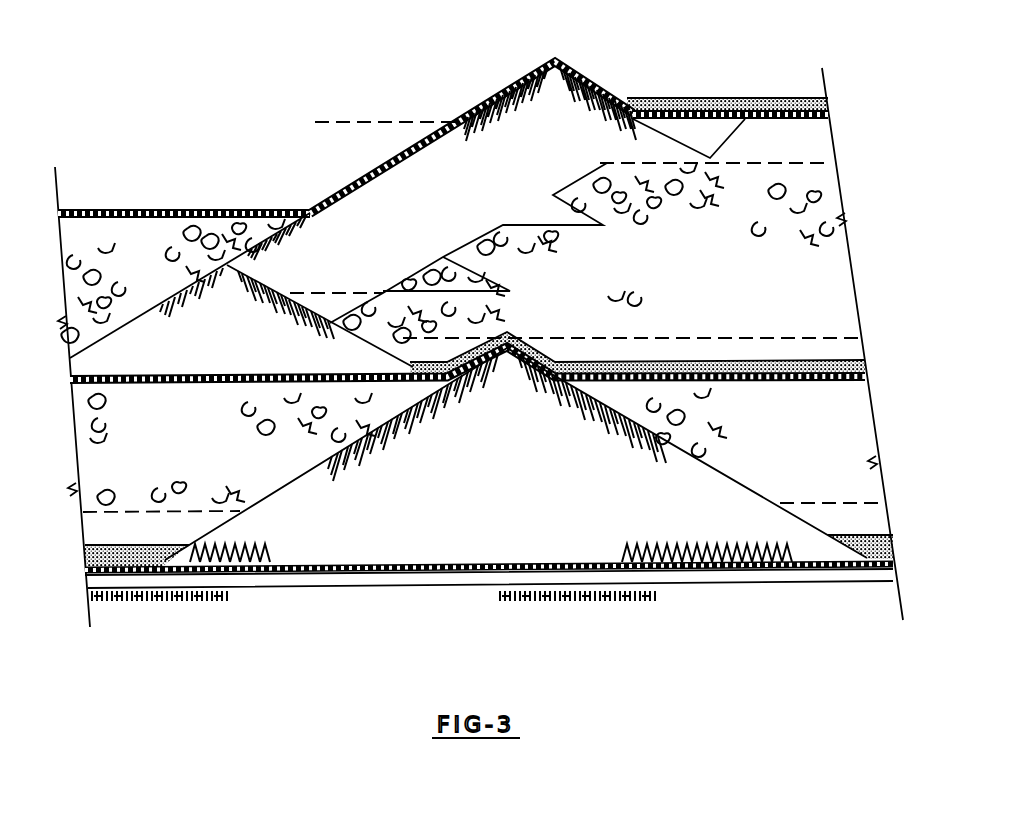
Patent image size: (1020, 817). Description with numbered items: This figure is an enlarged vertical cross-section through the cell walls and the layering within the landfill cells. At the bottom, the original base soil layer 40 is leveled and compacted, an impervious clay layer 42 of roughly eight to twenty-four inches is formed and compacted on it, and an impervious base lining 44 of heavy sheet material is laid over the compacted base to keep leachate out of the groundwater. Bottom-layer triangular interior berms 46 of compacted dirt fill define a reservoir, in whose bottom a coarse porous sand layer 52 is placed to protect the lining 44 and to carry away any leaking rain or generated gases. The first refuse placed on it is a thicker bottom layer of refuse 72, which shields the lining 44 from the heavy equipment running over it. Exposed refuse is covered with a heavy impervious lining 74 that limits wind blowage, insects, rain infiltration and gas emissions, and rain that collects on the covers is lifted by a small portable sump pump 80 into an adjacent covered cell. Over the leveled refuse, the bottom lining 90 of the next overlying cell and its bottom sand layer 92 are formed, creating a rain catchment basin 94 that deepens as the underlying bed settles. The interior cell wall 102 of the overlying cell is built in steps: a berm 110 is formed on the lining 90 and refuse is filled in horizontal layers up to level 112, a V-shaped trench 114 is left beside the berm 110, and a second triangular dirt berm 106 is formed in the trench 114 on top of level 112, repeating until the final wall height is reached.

The base soil layer 40 is at (547, 595).
The impervious clay layer 42 is at (713, 577).
The impervious base lining 44 is at (818, 565).
The bottom-layer triangular interior berm 46 is at (373, 532).
The coarse porous sand layer 52 is at (877, 560).
The bottom layer of refuse 72 is at (757, 353).
The heavy impervious lining 74 is at (150, 210).
The portable sump pump 80 is at (607, 400).
The bottom lining 90 is at (767, 97).
The bottom sand layer 92 is at (723, 97).
The rain catchment basin 94 is at (667, 97).
The interior cell wall 102 is at (477, 167).
The triangular dirt berm 106 is at (333, 253).
The berm 110 is at (173, 338).
The refuse level 112 is at (437, 290).
The V-shaped trench 114 is at (335, 307).